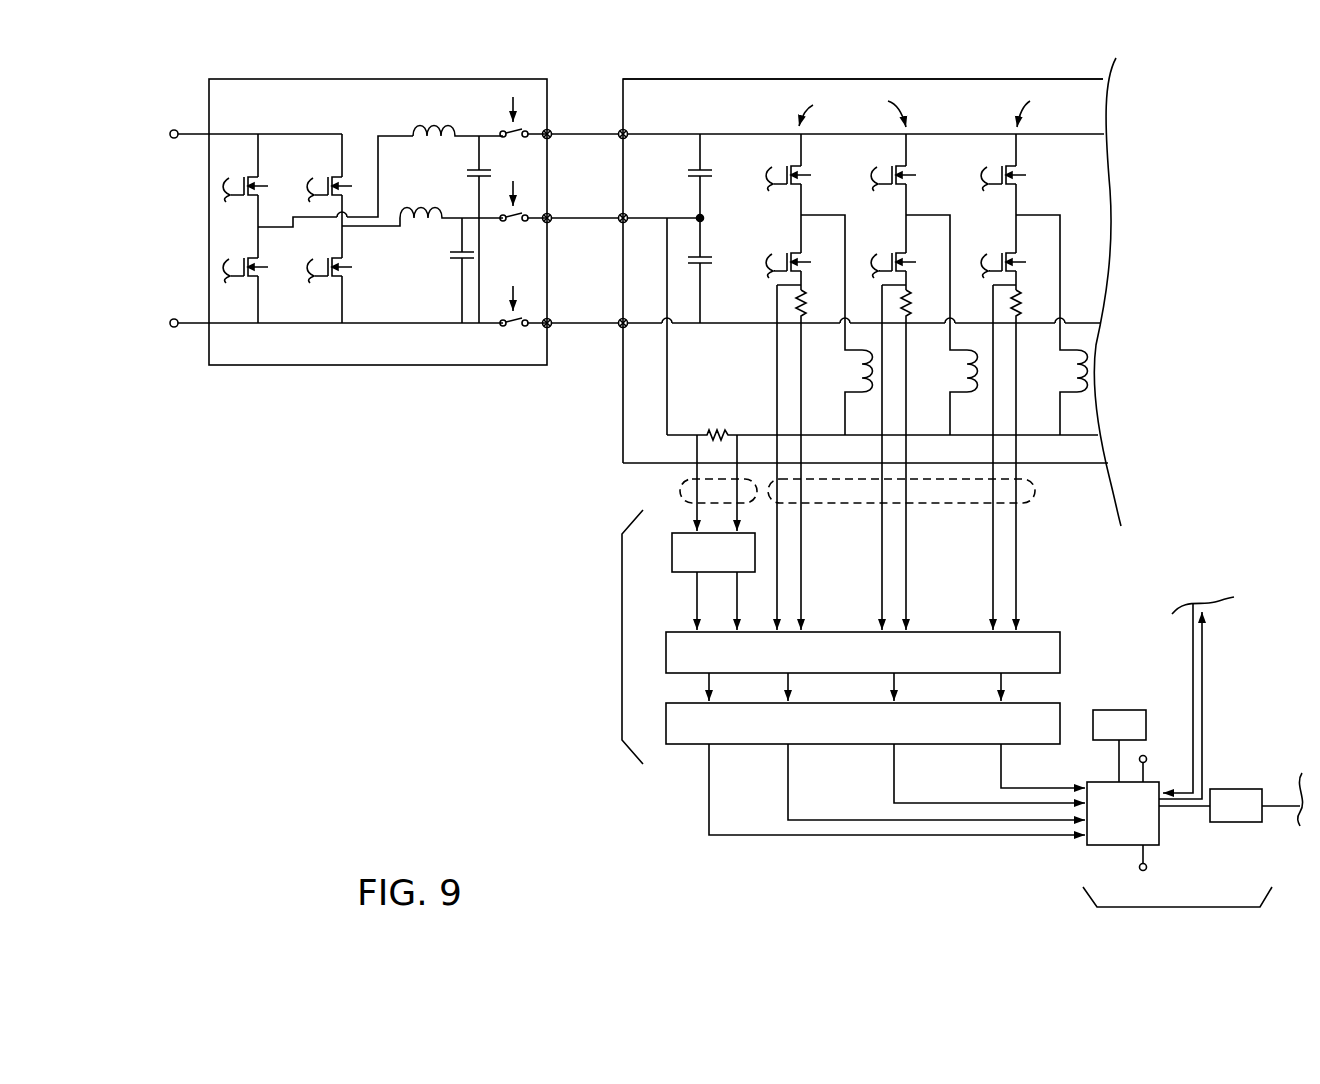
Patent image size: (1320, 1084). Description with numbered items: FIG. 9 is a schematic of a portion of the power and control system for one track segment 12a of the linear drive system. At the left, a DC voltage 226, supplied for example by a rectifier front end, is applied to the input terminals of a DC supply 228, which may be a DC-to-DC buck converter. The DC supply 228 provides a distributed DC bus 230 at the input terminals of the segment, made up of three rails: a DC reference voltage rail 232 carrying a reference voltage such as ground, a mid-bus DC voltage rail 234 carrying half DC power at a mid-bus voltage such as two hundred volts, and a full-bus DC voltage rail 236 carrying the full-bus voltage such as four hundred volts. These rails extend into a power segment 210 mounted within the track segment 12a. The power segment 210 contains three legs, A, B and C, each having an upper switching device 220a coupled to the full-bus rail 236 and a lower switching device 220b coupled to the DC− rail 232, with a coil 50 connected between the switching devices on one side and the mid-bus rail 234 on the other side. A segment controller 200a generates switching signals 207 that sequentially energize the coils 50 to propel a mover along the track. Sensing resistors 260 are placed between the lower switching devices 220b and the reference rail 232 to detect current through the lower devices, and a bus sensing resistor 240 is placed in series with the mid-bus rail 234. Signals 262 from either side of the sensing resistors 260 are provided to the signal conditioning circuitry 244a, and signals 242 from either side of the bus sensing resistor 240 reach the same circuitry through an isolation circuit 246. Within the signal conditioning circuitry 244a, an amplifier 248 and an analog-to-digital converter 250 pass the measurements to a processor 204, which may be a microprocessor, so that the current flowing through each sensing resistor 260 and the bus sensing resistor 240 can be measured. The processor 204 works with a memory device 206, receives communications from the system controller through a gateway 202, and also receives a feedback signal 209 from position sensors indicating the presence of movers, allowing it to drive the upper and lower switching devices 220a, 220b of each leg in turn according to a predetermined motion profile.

The DC voltage 226 is at (169, 377).
The DC supply 228 is at (384, 79).
The distributed DC bus 230 is at (592, 77).
The DC reference voltage rail 232 is at (586, 329).
The mid-bus DC voltage rail 234 is at (586, 224).
The full-bus DC voltage rail 236 is at (586, 140).
The motor drive 12a is at (883, 79).
The power segment 210 is at (967, 112).
The switching signals 207 is at (1203, 688).
The upper switching devices 220a is at (838, 163).
The lower switching devices 220b is at (779, 248).
The sensing resistors 260 is at (830, 287).
The bus sensing resistor 240 is at (722, 421).
The coil 50 is at (849, 362).
The reference sense signal lines 242 is at (676, 486).
The phase current sense signal lines 262 is at (1045, 500).
The isolation circuit 246 is at (731, 563).
The current sensing circuit 244a is at (621, 634).
The amplifier 248 is at (1043, 632).
The Analog-to-Digital Converter 250 is at (1043, 703).
The processor 204 is at (1105, 845).
The memory device 206 is at (1103, 736).
The feedback signal 209 is at (1197, 656).
The gateway 202 is at (1230, 789).
The controller 200a is at (1187, 907).